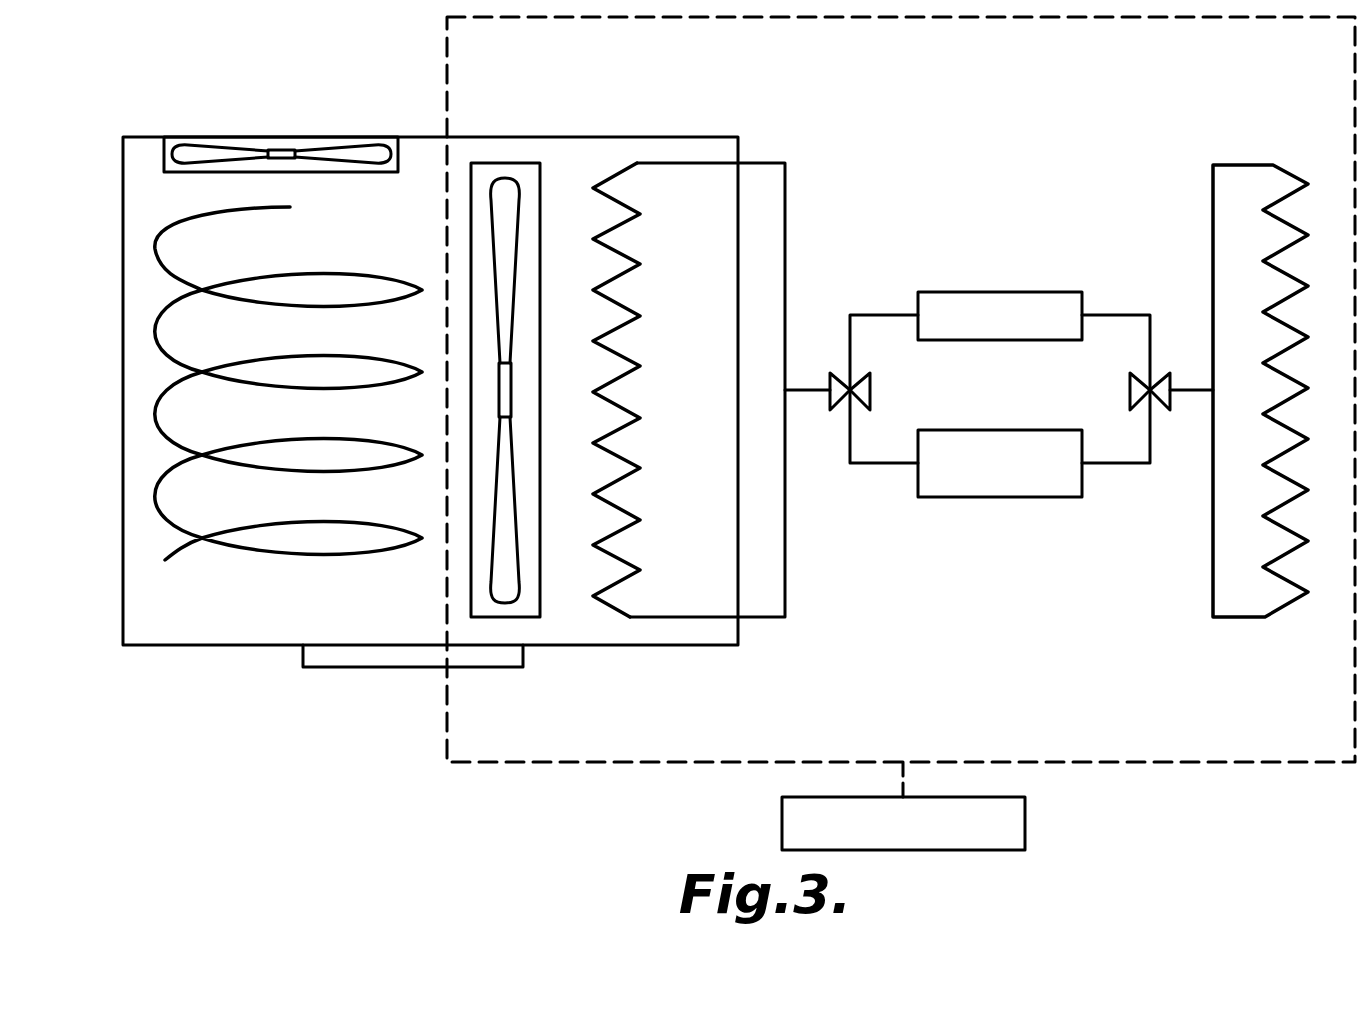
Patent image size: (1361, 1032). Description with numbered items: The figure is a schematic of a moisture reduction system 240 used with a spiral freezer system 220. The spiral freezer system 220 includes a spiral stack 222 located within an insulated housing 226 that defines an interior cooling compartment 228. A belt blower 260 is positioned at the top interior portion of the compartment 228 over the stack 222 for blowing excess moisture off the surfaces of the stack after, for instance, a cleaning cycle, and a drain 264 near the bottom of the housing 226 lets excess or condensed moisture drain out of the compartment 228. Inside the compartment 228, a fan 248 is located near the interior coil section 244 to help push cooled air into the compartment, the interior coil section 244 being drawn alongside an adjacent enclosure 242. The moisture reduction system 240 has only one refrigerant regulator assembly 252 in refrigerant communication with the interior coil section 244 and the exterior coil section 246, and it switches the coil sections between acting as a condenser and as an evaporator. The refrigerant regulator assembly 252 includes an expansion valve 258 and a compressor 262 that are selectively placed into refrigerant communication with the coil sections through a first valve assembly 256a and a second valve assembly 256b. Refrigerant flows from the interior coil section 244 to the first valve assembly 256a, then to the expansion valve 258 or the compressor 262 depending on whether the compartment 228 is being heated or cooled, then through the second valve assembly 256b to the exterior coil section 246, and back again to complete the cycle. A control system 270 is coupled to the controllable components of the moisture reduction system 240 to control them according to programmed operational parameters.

The spiral freezer system 220 is at (413, 393).
The spiral stack 222 is at (237, 450).
The insulated housing 226 is at (123, 227).
The cooling compartment 228 is at (142, 452).
The belt blower 260 is at (238, 148).
The drain 264 is at (397, 655).
The moisture reduction system 240 is at (525, 771).
The fan 248 is at (507, 163).
The interior coil section 244 is at (620, 172).
The air duct 242 is at (762, 163).
The exterior coil section 246 is at (1292, 172).
The refrigerant regulator assembly 252 is at (1099, 234).
The compressor 262 is at (1000, 292).
The expansion valve 258 is at (993, 498).
The first valve assembly 256a is at (870, 388).
The second valve assembly 256b is at (1130, 390).
The control system 270 is at (1026, 822).